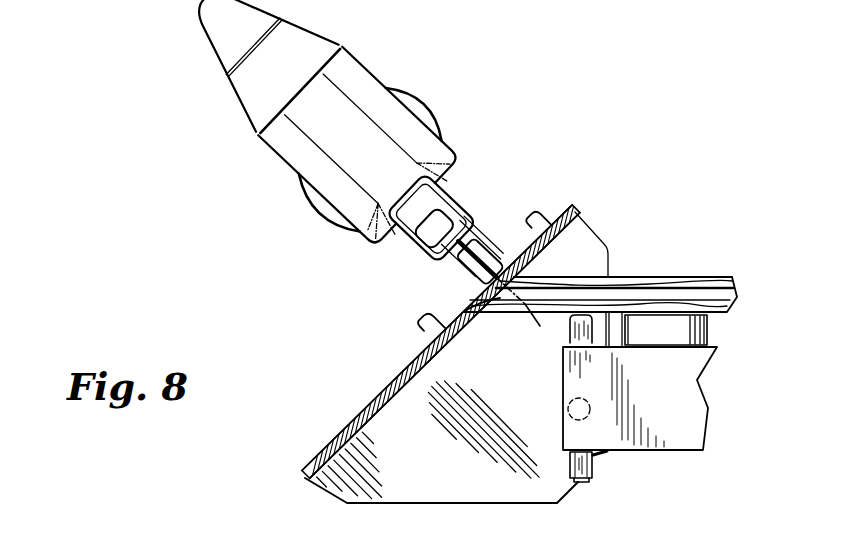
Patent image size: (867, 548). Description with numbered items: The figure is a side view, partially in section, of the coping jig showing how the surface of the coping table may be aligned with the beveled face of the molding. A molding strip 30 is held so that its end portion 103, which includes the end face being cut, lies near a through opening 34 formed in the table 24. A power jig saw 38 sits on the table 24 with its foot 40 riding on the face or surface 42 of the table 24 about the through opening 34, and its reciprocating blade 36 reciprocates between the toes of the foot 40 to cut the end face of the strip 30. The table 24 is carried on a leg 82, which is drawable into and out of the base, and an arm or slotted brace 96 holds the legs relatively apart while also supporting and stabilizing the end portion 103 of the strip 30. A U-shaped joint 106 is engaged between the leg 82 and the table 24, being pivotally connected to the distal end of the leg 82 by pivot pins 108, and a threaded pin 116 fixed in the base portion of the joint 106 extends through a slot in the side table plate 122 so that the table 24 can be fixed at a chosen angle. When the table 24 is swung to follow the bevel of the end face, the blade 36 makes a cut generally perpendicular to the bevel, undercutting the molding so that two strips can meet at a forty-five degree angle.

The table 24 is at (310, 459).
The molding strip 30 is at (711, 276).
The through opening 34 is at (464, 321).
The reciprocating blade 36 is at (485, 250).
The power jig saw 38 is at (231, 77).
The foot 40 is at (443, 312).
The face or surface 42 is at (355, 414).
The leg 82 is at (679, 452).
The arm or slotted brace 96 is at (707, 331).
The end portion of strip 103 is at (663, 276).
The U-shaped joint 106 is at (570, 465).
The pivot pin 108 is at (578, 483).
The threaded pin 116 is at (569, 401).
The side table plate 122 is at (433, 454).